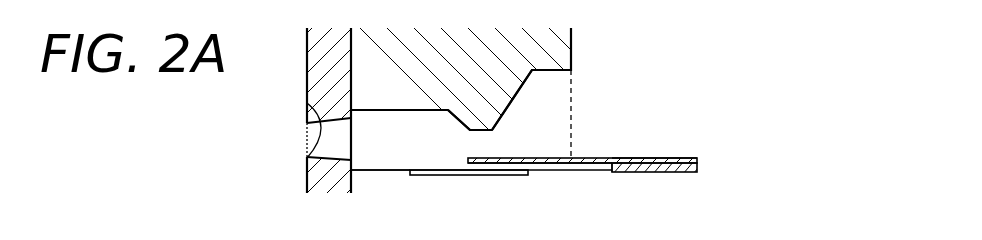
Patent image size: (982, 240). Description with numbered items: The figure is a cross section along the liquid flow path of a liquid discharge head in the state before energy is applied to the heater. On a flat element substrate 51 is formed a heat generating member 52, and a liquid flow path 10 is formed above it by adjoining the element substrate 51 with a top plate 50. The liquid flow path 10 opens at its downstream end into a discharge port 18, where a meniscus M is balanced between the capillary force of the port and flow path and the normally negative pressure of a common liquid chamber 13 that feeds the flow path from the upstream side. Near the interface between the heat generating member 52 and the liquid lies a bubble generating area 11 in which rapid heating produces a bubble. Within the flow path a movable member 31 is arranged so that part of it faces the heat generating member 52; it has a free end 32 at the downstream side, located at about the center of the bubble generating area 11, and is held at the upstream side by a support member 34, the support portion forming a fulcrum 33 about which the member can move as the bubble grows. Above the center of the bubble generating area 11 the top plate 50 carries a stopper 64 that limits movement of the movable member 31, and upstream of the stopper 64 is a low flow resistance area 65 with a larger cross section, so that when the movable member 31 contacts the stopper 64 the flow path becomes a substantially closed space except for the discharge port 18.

The liquid flow path 10 is at (372, 122).
The top plate 50 is at (433, 82).
The stopper 64 is at (477, 126).
The low flow resistance area 65 is at (544, 97).
The discharge port 18 is at (307, 140).
The meniscus M is at (307, 103).
The common liquid chamber 13 is at (629, 75).
The element substrate 51 is at (401, 203).
The heat generating member 52 is at (427, 168).
The bubble generating area 11 is at (490, 175).
The free end 32 is at (470, 158).
The movable member 31 is at (537, 162).
The fulcrum 33 is at (592, 162).
The support member 34 is at (633, 172).